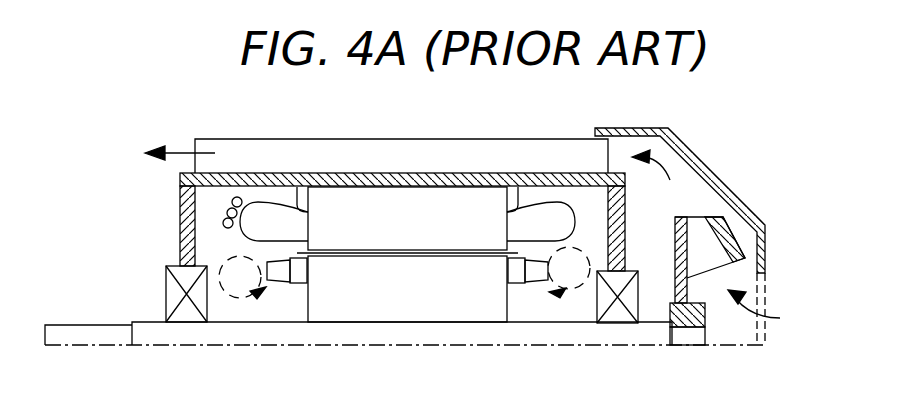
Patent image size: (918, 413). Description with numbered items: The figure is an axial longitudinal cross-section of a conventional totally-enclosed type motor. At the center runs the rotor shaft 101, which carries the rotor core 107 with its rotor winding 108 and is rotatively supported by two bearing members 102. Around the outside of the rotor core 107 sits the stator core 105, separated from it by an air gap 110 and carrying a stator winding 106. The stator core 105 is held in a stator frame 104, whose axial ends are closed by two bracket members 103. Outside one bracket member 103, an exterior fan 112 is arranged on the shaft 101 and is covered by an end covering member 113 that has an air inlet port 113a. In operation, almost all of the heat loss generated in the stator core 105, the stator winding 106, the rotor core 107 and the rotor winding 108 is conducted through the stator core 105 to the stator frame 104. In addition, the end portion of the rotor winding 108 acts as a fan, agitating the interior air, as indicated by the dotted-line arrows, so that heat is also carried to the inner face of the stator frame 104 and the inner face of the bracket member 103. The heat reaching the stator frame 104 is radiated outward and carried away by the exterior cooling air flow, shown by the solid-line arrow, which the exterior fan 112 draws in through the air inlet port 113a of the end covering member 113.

The rotor shaft 101 is at (65, 325).
The bearing member 102 is at (189, 313).
The bracket member 103 is at (180, 205).
The stator frame 104 is at (227, 185).
The stator core 105 is at (346, 197).
The stator winding 106 is at (250, 226).
The rotor core 107 is at (400, 305).
The rotor winding 108 is at (303, 283).
The air gap 110 is at (393, 253).
The exterior fan 112 is at (702, 217).
The end covering member 113 is at (765, 232).
The air inlet port 113a is at (765, 292).